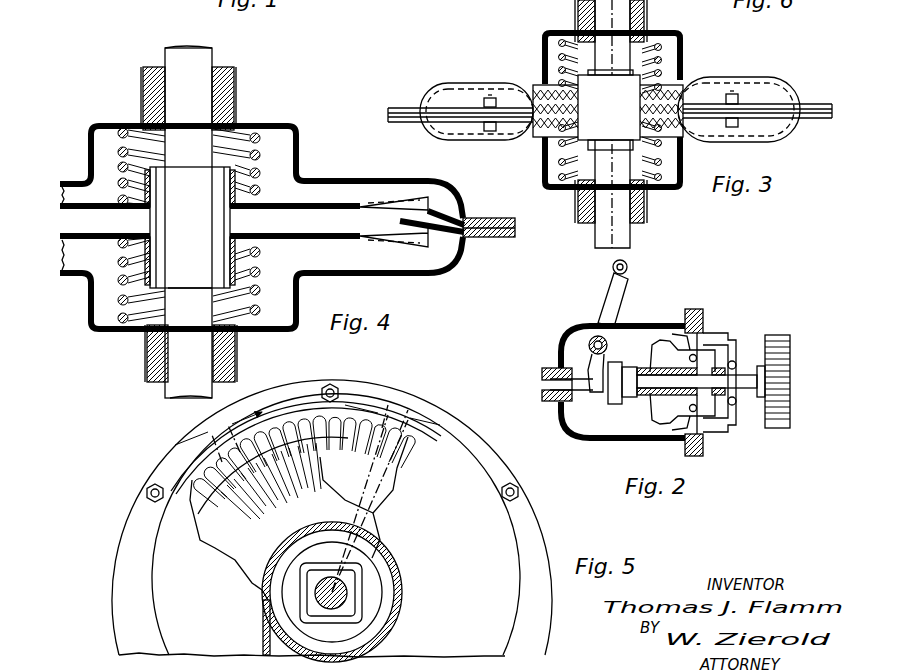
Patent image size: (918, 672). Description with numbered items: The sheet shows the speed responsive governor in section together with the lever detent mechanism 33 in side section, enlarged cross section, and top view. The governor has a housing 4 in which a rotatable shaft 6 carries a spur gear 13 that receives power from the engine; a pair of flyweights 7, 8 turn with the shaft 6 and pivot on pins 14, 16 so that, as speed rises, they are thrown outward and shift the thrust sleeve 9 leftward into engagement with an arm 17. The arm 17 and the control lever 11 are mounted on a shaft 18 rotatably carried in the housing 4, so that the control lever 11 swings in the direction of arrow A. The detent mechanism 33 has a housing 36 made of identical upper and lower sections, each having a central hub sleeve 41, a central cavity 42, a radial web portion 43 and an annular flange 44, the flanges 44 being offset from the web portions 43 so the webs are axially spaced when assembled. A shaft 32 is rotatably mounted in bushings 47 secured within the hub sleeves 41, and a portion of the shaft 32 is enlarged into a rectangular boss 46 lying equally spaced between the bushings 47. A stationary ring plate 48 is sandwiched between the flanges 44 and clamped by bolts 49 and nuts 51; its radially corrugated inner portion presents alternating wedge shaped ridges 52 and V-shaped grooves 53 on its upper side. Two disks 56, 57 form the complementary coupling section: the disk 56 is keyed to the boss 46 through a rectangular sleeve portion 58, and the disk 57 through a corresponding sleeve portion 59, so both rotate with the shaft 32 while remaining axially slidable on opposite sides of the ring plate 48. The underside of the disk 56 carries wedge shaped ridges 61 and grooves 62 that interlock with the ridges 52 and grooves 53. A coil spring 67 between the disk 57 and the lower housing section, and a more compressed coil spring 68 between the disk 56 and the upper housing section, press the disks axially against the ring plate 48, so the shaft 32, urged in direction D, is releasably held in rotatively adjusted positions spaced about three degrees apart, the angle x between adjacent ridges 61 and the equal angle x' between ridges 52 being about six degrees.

In FIG. 2, the housing 4 is at (598, 441).
In FIG. 2, the rotatable shaft 6 is at (587, 390).
In FIG. 2, the flyweight 7 is at (660, 345).
In FIG. 2, the flyweight 8 is at (660, 420).
In FIG. 2, the thrust sleeve 9 is at (614, 405).
In FIG. 2, the control lever 11 is at (608, 288).
In FIG. 2, the spur gear 13 is at (777, 428).
In FIG. 2, the pin 14 is at (689, 358).
In FIG. 2, the pin 16 is at (689, 408).
In FIG. 2, the arm 17 is at (588, 357).
In FIG. 2, the shaft 18 is at (607, 343).
In FIG. 4, the shaft 32 is at (165, 52).
In FIG. 3, the shaft 32 is at (631, 246).
In FIG. 5, the shaft 32 is at (343, 603).
In FIG. 4, the detent mechanism 33 is at (337, 150).
In FIG. 3, the detent mechanism 33 is at (492, 62).
In FIG. 5, the detent mechanism 33 is at (470, 427).
In FIG. 4, the housing 36 is at (350, 280).
In FIG. 3, the housing 36 is at (497, 150).
In FIG. 5, the housing 36 is at (484, 565).
In FIG. 4, the central hub sleeve 41 is at (236, 94).
In FIG. 3, the central hub sleeve 41 is at (577, 12).
In FIG. 4, the central cavity 42 is at (283, 126).
In FIG. 3, the central cavity 42 is at (681, 44).
In FIG. 5, the central cavity 42 is at (398, 570).
In FIG. 4, the radial web portion 43 is at (345, 180).
In FIG. 4, the annular flange 44 is at (490, 212).
In FIG. 3, the annular flange 44 is at (406, 110).
In FIG. 4, the boss 46 is at (196, 290).
In FIG. 3, the boss 46 is at (613, 150).
In FIG. 5, the boss 46 is at (328, 593).
In FIG. 4, the bushing 47 is at (217, 68).
In FIG. 3, the bushing 47 is at (634, 223).
In FIG. 4, the ring plate 48 is at (436, 220).
In FIG. 3, the ring plate 48 is at (683, 99).
In FIG. 5, the ring plate 48 is at (397, 468).
In FIG. 3, the bolt 49 is at (484, 126).
In FIG. 5, the bolt 49 is at (146, 496).
In FIG. 3, the nut 51 is at (484, 102).
In FIG. 5, the wedge shaped ridge 52 is at (376, 420).
In FIG. 5, the V-shaped groove 53 is at (285, 425).
In FIG. 4, the disk 56 is at (306, 203).
In FIG. 3, the disk 56 is at (545, 80).
In FIG. 5, the disk 56 is at (218, 540).
In FIG. 4, the disk 57 is at (318, 238).
In FIG. 3, the disk 57 is at (683, 123).
In FIG. 4, the rectangular sleeve portion 58 is at (151, 190).
In FIG. 3, the rectangular sleeve portion 58 is at (609, 105).
In FIG. 5, the rectangular sleeve portion 58 is at (335, 562).
In FIG. 4, the rectangular sleeve portion 59 is at (224, 260).
In FIG. 5, the wedge shaped ridge 61 is at (240, 532).
In FIG. 5, the wedge shaped groove 62 is at (197, 512).
In FIG. 4, the coil spring 67 is at (257, 253).
In FIG. 3, the coil spring 67 is at (545, 160).
In FIG. 4, the coil spring 68 is at (257, 172).
In FIG. 3, the coil spring 68 is at (662, 40).
In FIG. 5, the coil spring 68 is at (300, 583).